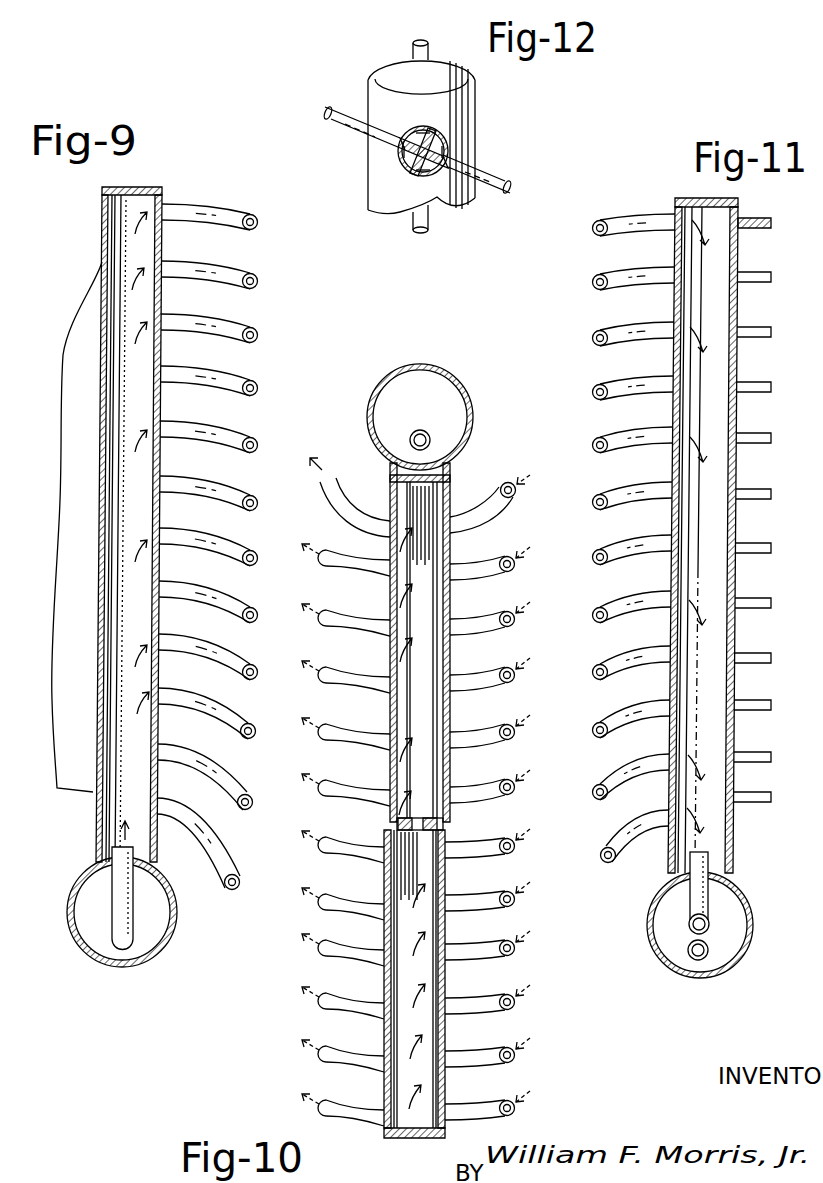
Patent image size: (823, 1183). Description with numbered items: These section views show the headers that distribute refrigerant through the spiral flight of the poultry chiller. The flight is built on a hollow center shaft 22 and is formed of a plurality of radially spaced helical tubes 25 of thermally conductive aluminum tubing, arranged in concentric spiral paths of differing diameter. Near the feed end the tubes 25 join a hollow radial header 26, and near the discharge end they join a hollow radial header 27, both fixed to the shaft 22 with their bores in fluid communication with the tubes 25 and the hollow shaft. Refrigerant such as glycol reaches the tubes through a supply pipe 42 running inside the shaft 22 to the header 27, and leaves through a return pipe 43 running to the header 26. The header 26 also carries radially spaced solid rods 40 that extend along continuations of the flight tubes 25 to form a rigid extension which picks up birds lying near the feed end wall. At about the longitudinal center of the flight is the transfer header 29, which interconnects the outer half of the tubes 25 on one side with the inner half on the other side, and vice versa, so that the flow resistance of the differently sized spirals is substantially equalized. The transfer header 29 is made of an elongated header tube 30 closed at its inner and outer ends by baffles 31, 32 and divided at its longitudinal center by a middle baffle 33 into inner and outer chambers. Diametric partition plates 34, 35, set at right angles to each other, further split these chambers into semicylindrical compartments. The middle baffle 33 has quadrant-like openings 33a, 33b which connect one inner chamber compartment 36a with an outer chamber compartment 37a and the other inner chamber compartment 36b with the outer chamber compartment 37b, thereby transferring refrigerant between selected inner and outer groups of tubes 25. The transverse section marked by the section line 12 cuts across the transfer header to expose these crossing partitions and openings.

In FIG. 10, the section line of FIG. 12 is at (497, 1035).
In FIG. 9, the hollow center shaft 22 is at (167, 935).
In FIG. 10, the hollow center shaft 22 is at (475, 408).
In FIG. 11, the hollow center shaft 22 is at (693, 975).
In FIG. 12, the hollow center shaft 22 is at (470, 91).
In FIG. 9, the helical tubes 25 is at (256, 386).
In FIG. 10, the helical tubes 25 is at (497, 620).
In FIG. 11, the helical tubes 25 is at (600, 388).
In FIG. 12, the helical tubes 25 is at (332, 107).
In FIG. 11, the header 26 is at (740, 256).
In FIG. 9, the header 27 is at (102, 223).
In FIG. 10, the transfer header 29 is at (460, 497).
In FIG. 10, the header tube 30 is at (390, 712).
In FIG. 10, the baffle 31 is at (390, 478).
In FIG. 10, the baffle 32 is at (400, 1135).
In FIG. 10, the middle baffle 33 is at (445, 825).
In FIG. 12, the quadrant-like opening 33a is at (415, 168).
In FIG. 10, the quadrant-like opening 33b is at (396, 825).
In FIG. 12, the quadrant-like opening 33b is at (413, 132).
In FIG. 10, the diametric partition plate 34 is at (393, 982).
In FIG. 12, the diametric partition plate 34 is at (473, 195).
In FIG. 10, the diametric partition plate 35 is at (408, 662).
In FIG. 12, the diametric partition plate 35 is at (452, 132).
In FIG. 12, the inner chamber compartment 36a is at (425, 175).
In FIG. 10, the inner chamber compartment 36b is at (393, 557).
In FIG. 12, the inner chamber compartment 36b is at (425, 128).
In FIG. 12, the outer chamber compartment 37a is at (404, 153).
In FIG. 10, the outer chamber compartment 37b is at (407, 878).
In FIG. 12, the outer chamber compartment 37b is at (448, 149).
In FIG. 11, the solid rods 40 is at (771, 333).
In FIG. 9, the supply pipe 42 is at (108, 922).
In FIG. 10, the supply pipe 42 is at (420, 440).
In FIG. 11, the supply pipe 42 is at (688, 952).
In FIG. 12, the supply pipe 42 is at (413, 227).
In FIG. 11, the return pipe 43 is at (690, 895).